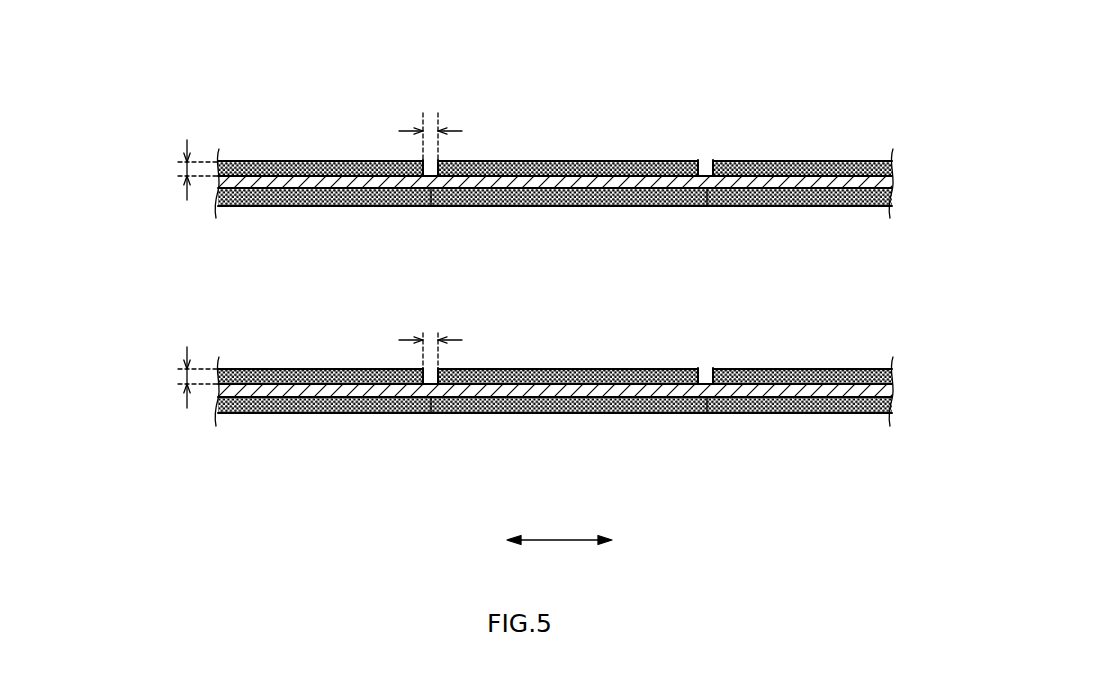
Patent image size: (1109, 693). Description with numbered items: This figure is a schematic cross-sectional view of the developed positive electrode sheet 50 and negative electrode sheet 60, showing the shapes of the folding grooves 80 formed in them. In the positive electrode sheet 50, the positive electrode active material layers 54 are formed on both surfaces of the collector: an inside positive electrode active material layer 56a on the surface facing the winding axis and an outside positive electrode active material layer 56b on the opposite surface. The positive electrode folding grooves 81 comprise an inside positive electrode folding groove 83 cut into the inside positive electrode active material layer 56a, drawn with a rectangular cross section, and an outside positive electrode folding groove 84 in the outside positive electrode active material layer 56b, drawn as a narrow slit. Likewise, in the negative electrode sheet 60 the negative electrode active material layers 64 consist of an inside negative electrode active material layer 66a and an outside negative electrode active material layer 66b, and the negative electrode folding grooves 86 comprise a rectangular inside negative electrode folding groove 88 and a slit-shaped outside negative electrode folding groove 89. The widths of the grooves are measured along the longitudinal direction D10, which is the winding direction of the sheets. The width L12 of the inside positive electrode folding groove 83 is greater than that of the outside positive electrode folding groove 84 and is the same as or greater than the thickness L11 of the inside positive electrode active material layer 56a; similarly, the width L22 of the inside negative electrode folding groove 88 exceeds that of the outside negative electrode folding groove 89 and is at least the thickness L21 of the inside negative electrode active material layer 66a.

The positive electrode sheet 50 is at (554, 167).
The positive electrode active material layers 54 is at (554, 178).
The inside positive electrode active material layer 56a is at (312, 160).
The outside positive electrode active material layer 56b is at (293, 207).
The negative electrode sheet 60 is at (554, 376).
The negative electrode active material layers 64 is at (554, 387).
The inside negative electrode active material layer 66a is at (312, 367).
The outside negative electrode active material layer 66b is at (293, 414).
The folding grooves 80 is at (606, 289).
The positive electrode folding grooves 81 is at (606, 185).
The inside positive electrode folding groove 83 is at (450, 153).
The outside positive electrode folding groove 84 is at (432, 212).
The negative electrode folding grooves 86 is at (606, 391).
The inside negative electrode folding groove 88 is at (450, 362).
The outside negative electrode folding groove 89 is at (432, 418).
The thickness of the inside positive electrode active material layer L11 is at (176, 170).
The width of the inside positive electrode folding grooves L12 is at (430, 128).
The thickness of the inside negative electrode active material layer L21 is at (176, 377).
The width of the inside negative electrode folding grooves L22 is at (430, 335).
The longitudinal direction D10 is at (559, 554).